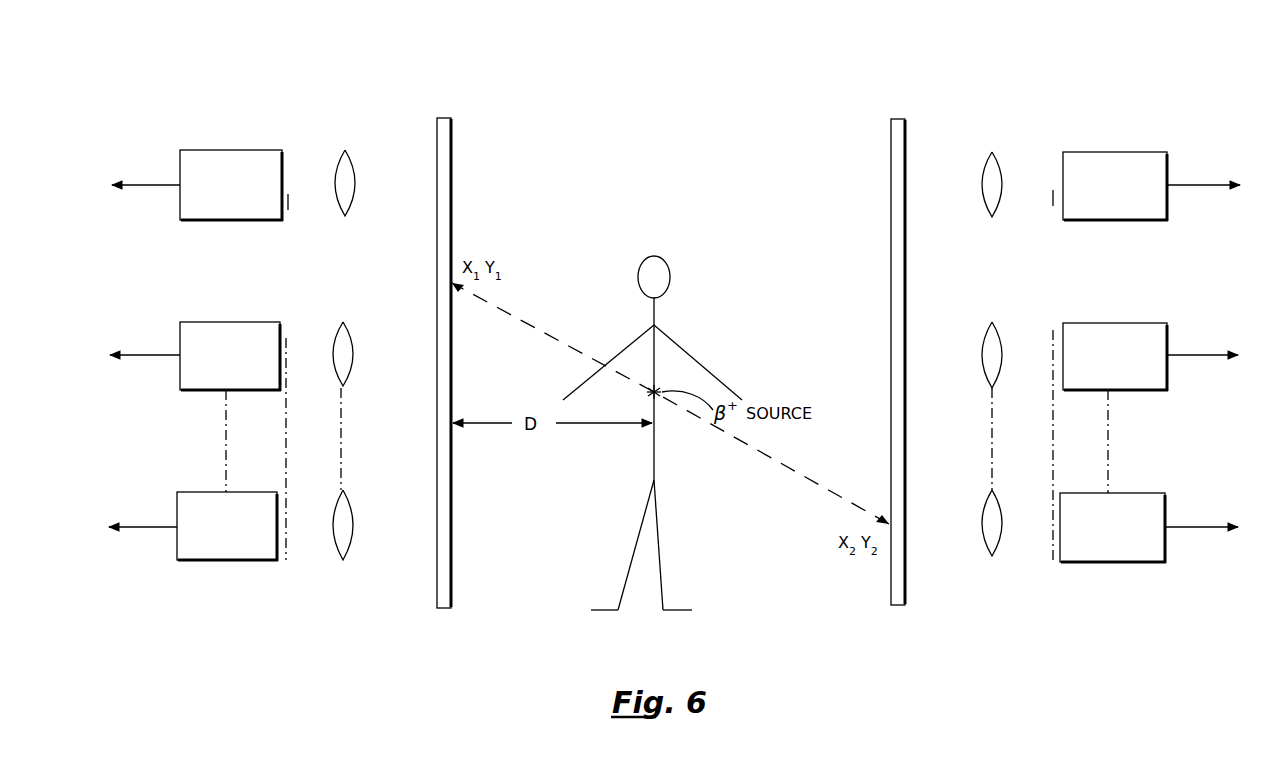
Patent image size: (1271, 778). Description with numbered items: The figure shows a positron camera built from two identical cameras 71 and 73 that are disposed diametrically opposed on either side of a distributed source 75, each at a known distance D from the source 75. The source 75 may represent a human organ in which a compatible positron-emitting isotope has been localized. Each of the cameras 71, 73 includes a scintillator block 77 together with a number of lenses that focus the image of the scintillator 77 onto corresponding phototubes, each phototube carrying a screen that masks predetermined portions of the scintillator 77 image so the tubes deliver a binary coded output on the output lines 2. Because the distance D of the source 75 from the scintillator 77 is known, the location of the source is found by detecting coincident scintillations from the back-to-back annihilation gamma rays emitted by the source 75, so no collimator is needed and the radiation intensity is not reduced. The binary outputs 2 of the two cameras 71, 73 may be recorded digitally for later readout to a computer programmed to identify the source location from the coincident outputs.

The camera 71 is at (261, 100).
The camera 73 is at (1087, 102).
The distributed source 75 is at (647, 394).
The scintillator block 77 is at (452, 121).
The output signal line 2 is at (674, 343).